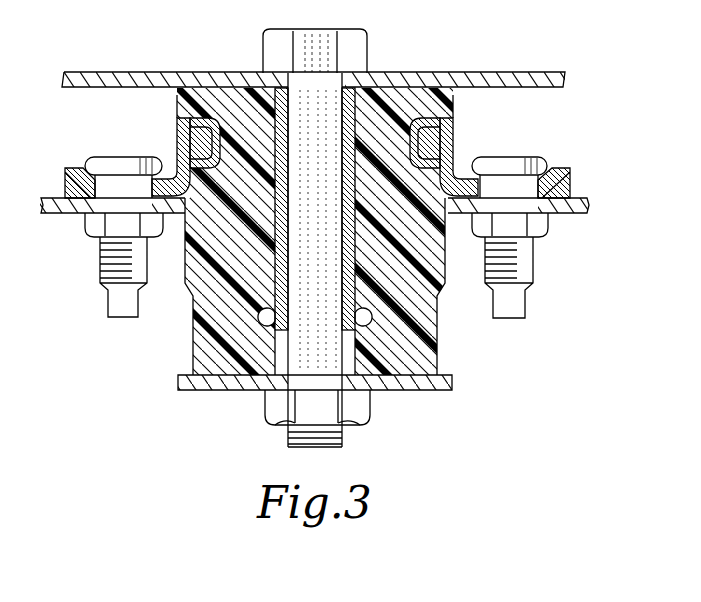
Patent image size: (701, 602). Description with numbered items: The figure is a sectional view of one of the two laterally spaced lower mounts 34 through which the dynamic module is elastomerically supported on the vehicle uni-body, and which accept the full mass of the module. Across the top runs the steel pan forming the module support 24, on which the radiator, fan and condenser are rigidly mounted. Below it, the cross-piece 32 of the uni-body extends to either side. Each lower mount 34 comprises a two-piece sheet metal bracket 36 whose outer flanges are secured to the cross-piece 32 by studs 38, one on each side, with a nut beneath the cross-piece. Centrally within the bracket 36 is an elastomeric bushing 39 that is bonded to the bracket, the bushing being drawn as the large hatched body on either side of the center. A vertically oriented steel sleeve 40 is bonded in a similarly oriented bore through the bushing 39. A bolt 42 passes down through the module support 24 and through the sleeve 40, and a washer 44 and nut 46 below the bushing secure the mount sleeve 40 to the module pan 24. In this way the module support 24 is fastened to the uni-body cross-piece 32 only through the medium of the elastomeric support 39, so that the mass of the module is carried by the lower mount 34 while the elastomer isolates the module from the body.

The module support 24 is at (462, 72).
The cross-piece 32 is at (557, 213).
The lower mount 34 is at (445, 332).
The two-piece sheet metal bracket 36 is at (467, 176).
The stud 38 is at (110, 157).
The elastomeric bushing 39 is at (215, 315).
The steel sleeve 40 is at (280, 288).
The bolt 42 is at (290, 432).
The washer 44 is at (442, 385).
The nut 46 is at (358, 412).